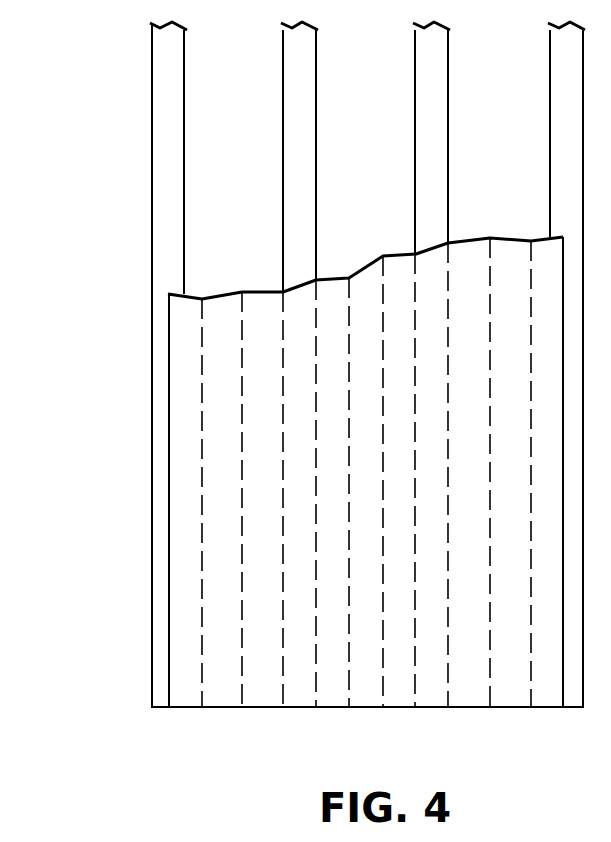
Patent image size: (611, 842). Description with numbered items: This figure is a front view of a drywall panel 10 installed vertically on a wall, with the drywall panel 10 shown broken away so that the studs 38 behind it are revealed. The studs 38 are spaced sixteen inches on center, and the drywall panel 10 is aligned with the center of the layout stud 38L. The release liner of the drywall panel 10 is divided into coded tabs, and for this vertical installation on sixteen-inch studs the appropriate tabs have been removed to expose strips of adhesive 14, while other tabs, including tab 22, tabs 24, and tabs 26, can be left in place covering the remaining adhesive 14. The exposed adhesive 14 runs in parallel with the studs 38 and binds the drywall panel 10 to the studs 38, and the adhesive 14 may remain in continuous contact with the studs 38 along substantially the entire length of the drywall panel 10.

The drywall panel 10 is at (160, 610).
The adhesive 14 is at (548, 672).
The tab 22 is at (368, 672).
The tab 24 is at (262, 672).
The tab 26 is at (226, 672).
The studs 38 is at (395, 86).
The layout stud 38L is at (140, 113).